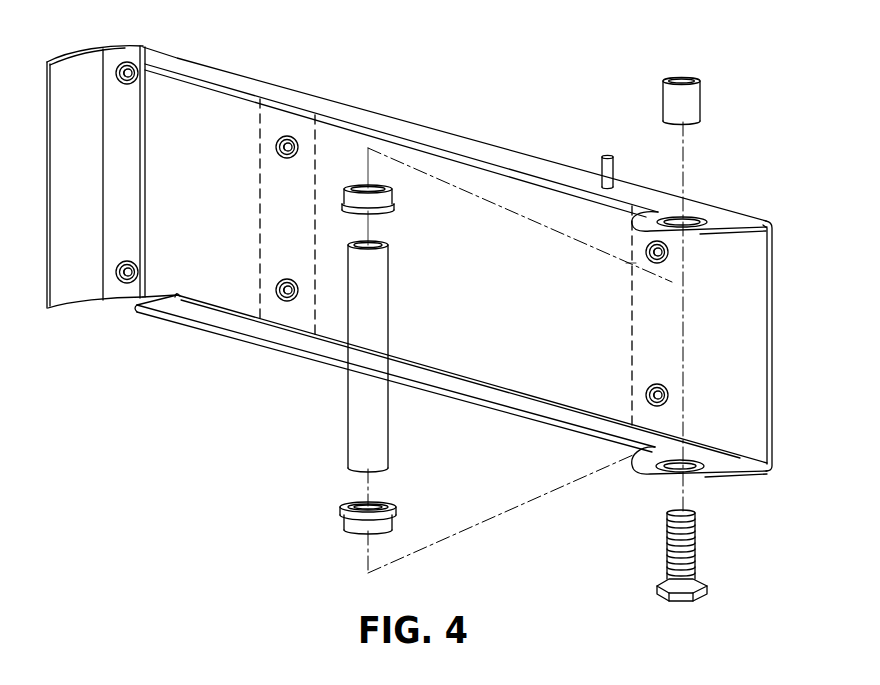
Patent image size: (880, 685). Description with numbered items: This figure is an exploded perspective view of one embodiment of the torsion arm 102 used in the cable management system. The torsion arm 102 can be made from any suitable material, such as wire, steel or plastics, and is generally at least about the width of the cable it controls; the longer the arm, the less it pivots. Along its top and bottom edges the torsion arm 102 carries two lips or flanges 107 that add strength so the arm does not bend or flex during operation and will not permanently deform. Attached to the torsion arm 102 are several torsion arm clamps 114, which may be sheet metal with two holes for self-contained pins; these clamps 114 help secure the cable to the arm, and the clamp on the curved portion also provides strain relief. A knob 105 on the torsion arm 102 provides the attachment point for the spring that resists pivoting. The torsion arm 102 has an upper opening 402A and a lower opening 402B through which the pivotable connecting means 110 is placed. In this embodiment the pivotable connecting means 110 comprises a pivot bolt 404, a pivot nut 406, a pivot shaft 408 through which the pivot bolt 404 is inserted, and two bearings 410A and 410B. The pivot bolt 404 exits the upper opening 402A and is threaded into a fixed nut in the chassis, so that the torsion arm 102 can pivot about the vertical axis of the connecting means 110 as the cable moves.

The torsion arm 102 is at (419, 303).
The knob 105 is at (607, 155).
The flanges 107 is at (390, 116).
The pivotable connecting means 110 is at (738, 174).
The torsion arm clamps 114 is at (125, 52).
The upper opening 402A is at (690, 217).
The lower opening 402B is at (707, 462).
The pivot bolt 404 is at (697, 550).
The pivot nut 406 is at (388, 423).
The pivot shaft 408 is at (700, 96).
The first bearing 410A is at (393, 199).
The second bearing 410B is at (397, 520).